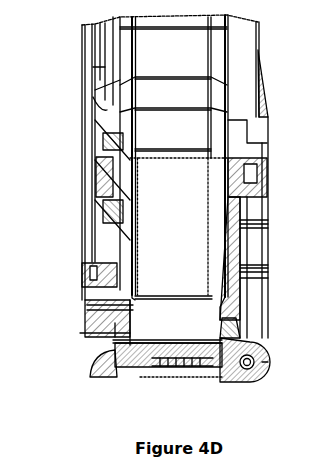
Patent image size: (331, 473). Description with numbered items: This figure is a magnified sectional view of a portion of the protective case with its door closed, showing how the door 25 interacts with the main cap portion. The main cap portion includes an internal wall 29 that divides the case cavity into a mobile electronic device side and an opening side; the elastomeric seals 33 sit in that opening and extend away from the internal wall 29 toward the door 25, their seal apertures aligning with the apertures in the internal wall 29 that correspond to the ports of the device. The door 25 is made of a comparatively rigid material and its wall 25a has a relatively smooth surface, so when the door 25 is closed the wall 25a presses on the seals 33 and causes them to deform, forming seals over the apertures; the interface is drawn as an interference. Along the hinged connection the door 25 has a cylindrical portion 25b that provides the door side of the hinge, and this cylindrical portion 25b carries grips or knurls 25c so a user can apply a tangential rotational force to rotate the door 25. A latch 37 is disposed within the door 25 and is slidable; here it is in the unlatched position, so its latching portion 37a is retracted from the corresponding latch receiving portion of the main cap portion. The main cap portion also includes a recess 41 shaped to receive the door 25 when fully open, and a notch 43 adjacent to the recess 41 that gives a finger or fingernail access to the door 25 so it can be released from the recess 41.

The internal wall 29 is at (153, 313).
The elastomeric seals 33 is at (130, 331).
The door 25 is at (223, 362).
The wall 25a is at (118, 346).
The cylindrical portion 25b is at (257, 378).
The grips or knurls 25c is at (248, 340).
The latch 37 is at (188, 368).
The latching portion 37a is at (100, 353).
The recess 41 is at (251, 268).
The notch 43 is at (255, 223).